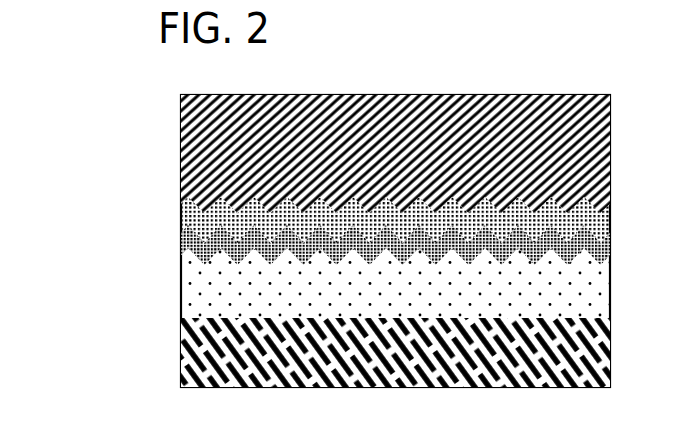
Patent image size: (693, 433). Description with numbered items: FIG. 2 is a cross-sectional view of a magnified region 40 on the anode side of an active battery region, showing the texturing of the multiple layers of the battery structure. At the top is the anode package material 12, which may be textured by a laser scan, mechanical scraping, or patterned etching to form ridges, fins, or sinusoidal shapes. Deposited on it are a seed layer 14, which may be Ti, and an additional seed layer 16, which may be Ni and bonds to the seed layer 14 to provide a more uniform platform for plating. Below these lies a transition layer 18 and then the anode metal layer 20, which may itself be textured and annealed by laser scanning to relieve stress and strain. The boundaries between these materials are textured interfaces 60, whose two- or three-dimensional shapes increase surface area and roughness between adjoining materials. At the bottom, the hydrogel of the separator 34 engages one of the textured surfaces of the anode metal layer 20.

The anode package material 12 is at (195, 153).
The seed layer 14 is at (197, 223).
The additional seed layer 16 is at (395, 225).
The transition layer 18 is at (190, 250).
The anode metal layer 20 is at (227, 285).
The separator 34 is at (227, 350).
The region 40 is at (500, 85).
The textured interfaces 60 is at (568, 322).